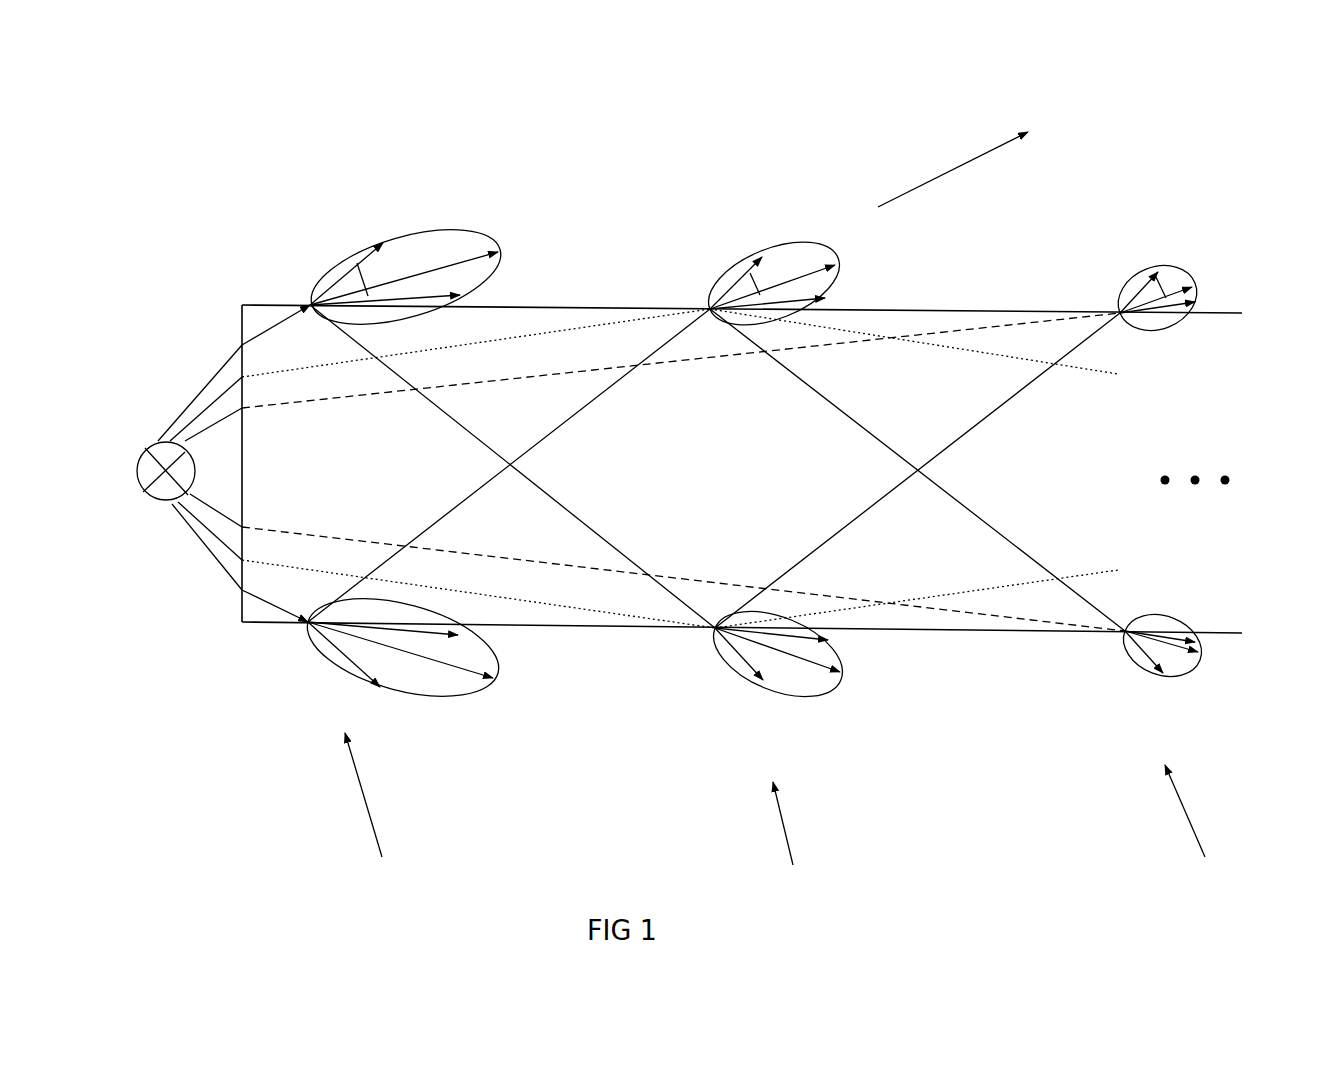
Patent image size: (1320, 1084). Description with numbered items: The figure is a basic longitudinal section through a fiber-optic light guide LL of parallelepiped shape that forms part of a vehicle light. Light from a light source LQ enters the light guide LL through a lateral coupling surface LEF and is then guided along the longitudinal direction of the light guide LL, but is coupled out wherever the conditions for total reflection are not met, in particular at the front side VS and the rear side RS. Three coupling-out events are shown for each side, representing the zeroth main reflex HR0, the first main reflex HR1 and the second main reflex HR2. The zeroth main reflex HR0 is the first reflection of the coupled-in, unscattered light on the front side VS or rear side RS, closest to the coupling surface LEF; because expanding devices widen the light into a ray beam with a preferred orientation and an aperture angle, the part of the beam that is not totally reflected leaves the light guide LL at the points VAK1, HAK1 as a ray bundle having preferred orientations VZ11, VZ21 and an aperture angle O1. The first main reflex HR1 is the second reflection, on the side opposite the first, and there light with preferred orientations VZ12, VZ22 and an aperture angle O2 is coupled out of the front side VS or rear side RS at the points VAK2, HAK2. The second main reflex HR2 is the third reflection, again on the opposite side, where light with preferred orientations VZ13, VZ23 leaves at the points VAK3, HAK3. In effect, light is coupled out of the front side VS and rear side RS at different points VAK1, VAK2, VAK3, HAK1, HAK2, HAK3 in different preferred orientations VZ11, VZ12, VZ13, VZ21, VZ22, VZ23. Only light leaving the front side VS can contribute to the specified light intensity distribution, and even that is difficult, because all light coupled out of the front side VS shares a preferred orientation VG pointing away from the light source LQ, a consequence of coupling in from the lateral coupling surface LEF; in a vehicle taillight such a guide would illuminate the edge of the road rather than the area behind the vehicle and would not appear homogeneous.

The fiber-optic light guide LL is at (260, 318).
The light source LQ is at (166, 455).
The coupling surface LEF is at (242, 605).
The front side VS is at (280, 305).
The rear side RS is at (268, 623).
The coupling-out point of main reflex 0 on the front side VAK1 is at (310, 305).
The coupling-out point of the 1st main reflex on the front side VAK2 is at (710, 309).
The coupling-out point of the 2nd main reflex on the front side VAK3 is at (1120, 313).
The coupling-out point of main reflex 0 on the rear side HAK1 is at (308, 622).
The coupling-out point of the 1st main reflex on the rear side HAK2 is at (715, 628).
The coupling-out point of the 2nd main reflex on the rear side HAK3 is at (1125, 631).
The preferred orientation of light coupled out at VAK1 VZ11 is at (440, 265).
The preferred orientation of light coupled out at VAK2 VZ12 is at (793, 280).
The preferred orientation of light coupled out at VAK3 VZ13 is at (1178, 290).
The preferred orientation of light coupled out at HAK1 VZ21 is at (462, 668).
The preferred orientation of light coupled out at HAK2 VZ22 is at (773, 650).
The preferred orientation of light coupled out at HAK3 VZ23 is at (1165, 647).
The aperture angle O1 is at (367, 292).
The aperture angle O2 is at (760, 307).
The preferred orientation VG is at (898, 197).
The main reflex 0 HR0 is at (379, 815).
The 1st main reflex HR1 is at (796, 841).
The 2nd main reflex HR2 is at (1199, 830).